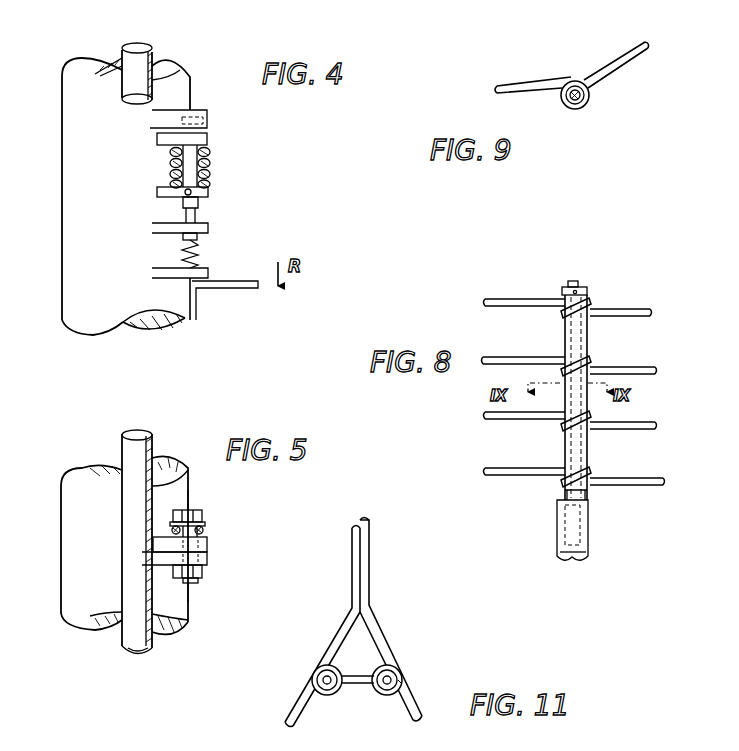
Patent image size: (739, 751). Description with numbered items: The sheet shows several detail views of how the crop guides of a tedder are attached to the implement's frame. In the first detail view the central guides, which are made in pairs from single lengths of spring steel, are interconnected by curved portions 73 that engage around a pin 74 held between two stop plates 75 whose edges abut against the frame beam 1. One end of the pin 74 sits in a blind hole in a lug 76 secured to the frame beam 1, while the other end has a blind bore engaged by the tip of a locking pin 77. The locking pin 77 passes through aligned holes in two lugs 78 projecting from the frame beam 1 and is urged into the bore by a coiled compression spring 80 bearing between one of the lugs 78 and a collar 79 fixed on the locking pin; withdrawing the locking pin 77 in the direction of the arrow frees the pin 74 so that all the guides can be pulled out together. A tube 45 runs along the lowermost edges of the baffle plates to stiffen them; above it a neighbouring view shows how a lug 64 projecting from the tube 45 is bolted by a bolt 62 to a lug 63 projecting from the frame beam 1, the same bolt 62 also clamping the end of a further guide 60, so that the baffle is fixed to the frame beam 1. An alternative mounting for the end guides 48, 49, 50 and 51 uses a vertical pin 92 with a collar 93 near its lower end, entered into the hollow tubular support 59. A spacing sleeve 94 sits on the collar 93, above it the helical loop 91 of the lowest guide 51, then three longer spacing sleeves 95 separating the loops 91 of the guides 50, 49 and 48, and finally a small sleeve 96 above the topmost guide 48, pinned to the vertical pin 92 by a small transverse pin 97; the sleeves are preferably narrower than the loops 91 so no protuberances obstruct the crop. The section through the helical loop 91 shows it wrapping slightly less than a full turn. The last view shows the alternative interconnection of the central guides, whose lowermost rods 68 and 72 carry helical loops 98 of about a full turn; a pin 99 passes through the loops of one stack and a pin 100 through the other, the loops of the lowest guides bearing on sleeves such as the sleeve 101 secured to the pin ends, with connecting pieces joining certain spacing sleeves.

In FIG. 4, the frame beam 1 is at (186, 304).
In FIG. 5, the frame beam 1 is at (88, 620).
In FIG. 4, the tube 45 is at (138, 52).
In FIG. 5, the tube 45 is at (120, 648).
In FIG. 8, the guide 48 is at (514, 290).
In FIG. 8, the guide 49 is at (506, 358).
In FIG. 9, the guide 50 is at (528, 86).
In FIG. 8, the guide 50 is at (486, 414).
In FIG. 8, the guide 51 is at (486, 470).
In FIG. 8, the tubular support 59 is at (588, 554).
In FIG. 5, the further guide 60 is at (204, 530).
In FIG. 5, the bolt 62 is at (202, 514).
In FIG. 5, the lug 63 is at (208, 544).
In FIG. 5, the lug 64 is at (208, 560).
In FIG. 11, the guide rod 68 is at (297, 702).
In FIG. 11, the guide rod 72 is at (420, 716).
In FIG. 4, the curved portion 73 is at (210, 164).
In FIG. 4, the pin 74 is at (200, 188).
In FIG. 4, the stop plate 75 is at (208, 138).
In FIG. 4, the lug 76 is at (208, 118).
In FIG. 4, the locking pin 77 is at (236, 288).
In FIG. 4, the lug 78 is at (210, 272).
In FIG. 4, the collar 79 is at (182, 234).
In FIG. 4, the coiled compression spring 80 is at (184, 245).
In FIG. 9, the helical loop 91 is at (589, 93).
In FIG. 8, the helical loop 91 is at (561, 428).
In FIG. 9, the vertical pin 92 is at (566, 106).
In FIG. 8, the vertical pin 92 is at (573, 281).
In FIG. 8, the collar 93 is at (589, 506).
In FIG. 8, the spacing sleeve 94 is at (561, 494).
In FIG. 9, the longer spacing sleeve 95 is at (583, 110).
In FIG. 8, the longer spacing sleeve 95 is at (588, 455).
In FIG. 8, the small sleeve 96 is at (577, 293).
In FIG. 8, the transverse pin 97 is at (586, 290).
In FIG. 11, the helical loop 98 is at (403, 684).
In FIG. 11, the pin 99 is at (328, 696).
In FIG. 11, the pin 100 is at (386, 696).
In FIG. 11, the sleeve 101 is at (370, 675).